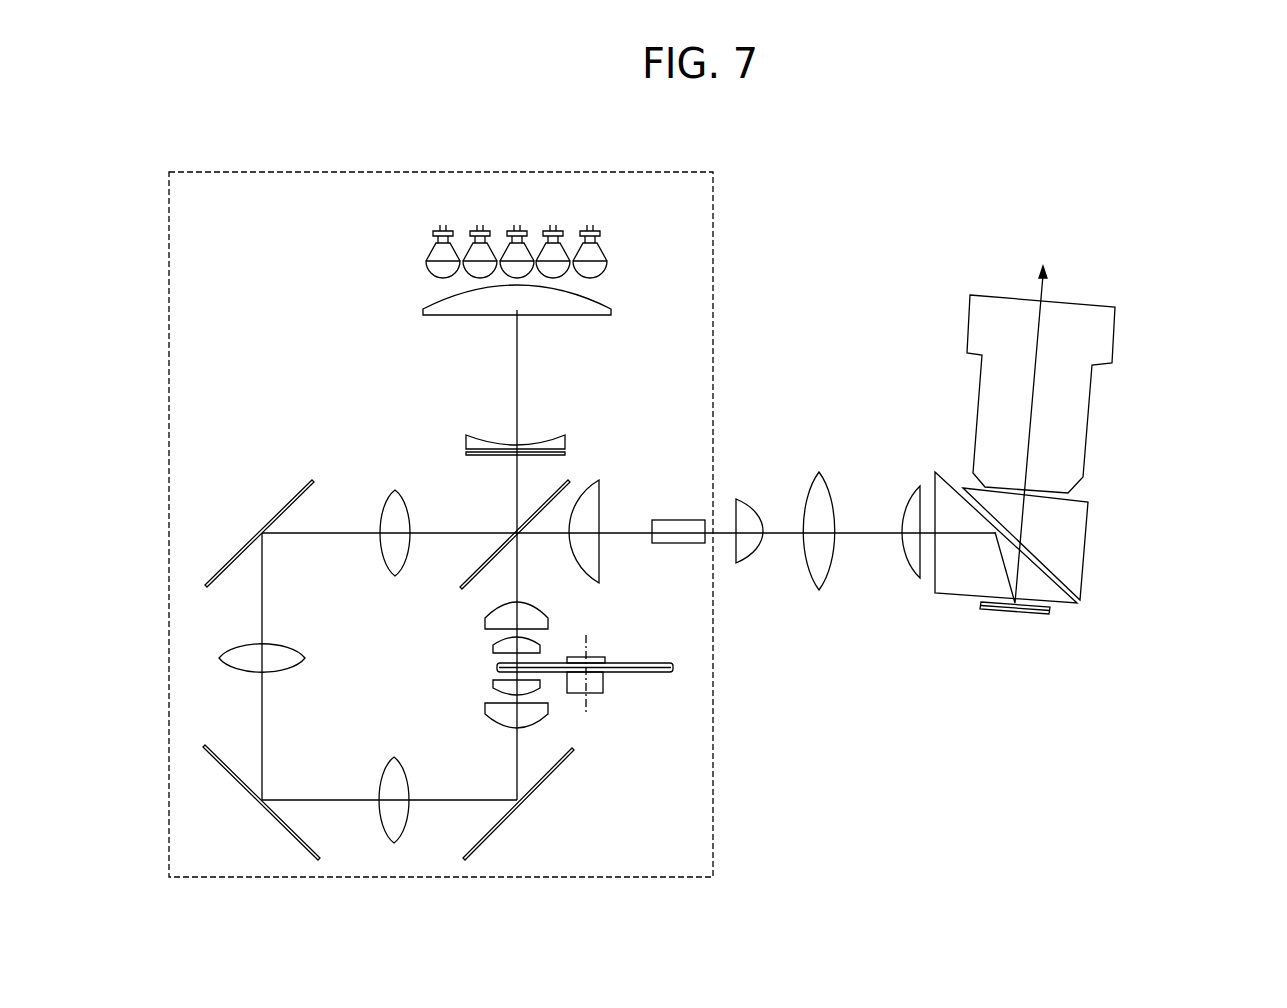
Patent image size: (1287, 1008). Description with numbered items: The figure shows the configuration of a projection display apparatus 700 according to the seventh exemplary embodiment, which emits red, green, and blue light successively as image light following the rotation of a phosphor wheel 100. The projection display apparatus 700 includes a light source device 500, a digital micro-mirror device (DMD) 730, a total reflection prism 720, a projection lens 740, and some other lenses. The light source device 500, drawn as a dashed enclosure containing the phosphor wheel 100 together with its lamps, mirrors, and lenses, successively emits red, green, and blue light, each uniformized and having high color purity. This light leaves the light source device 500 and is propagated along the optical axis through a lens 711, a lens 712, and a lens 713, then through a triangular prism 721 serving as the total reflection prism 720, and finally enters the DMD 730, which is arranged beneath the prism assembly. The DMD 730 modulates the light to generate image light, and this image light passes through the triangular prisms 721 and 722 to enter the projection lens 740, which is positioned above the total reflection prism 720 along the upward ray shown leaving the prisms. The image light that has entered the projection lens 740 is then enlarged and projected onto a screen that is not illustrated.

The phosphor wheel 100 is at (666, 660).
The light source device 500 is at (650, 172).
The projection display apparatus 700 is at (1083, 200).
The lens 711 is at (742, 497).
The lens 712 is at (820, 503).
The lens 713 is at (915, 503).
The total reflection prism 720 is at (1163, 565).
The triangular prism 721 is at (1053, 595).
The triangular prism 722 is at (1073, 560).
The digital micro-mirror device (DMD) 730 is at (1032, 615).
The projection lens 740 is at (982, 325).